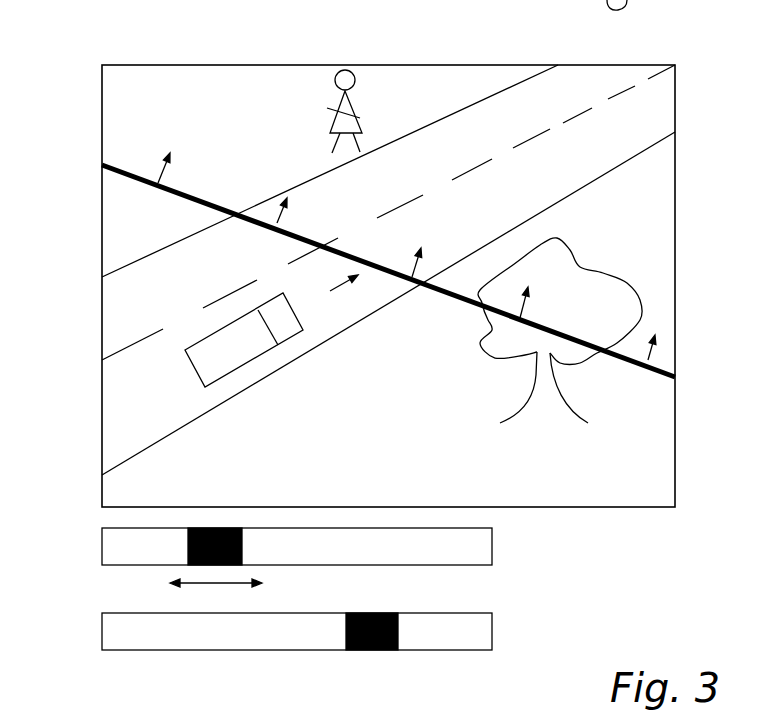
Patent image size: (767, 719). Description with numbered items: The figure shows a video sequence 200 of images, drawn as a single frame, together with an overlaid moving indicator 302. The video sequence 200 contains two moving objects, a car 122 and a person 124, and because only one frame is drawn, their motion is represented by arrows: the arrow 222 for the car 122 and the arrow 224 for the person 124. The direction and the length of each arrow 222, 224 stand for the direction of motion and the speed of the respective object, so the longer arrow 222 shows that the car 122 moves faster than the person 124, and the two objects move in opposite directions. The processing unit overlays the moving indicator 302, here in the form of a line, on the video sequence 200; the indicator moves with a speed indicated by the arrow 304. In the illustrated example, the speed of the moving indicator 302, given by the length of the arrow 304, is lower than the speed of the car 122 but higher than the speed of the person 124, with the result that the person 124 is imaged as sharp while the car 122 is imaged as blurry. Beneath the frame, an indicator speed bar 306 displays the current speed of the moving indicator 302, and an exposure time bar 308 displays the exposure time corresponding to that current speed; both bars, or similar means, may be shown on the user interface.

The video sequence 200 is at (200, 65).
The moving indicator 302 is at (207, 203).
The arrow 304 is at (158, 183).
The person 124 is at (367, 127).
The arrow 224 is at (315, 129).
The car 122 is at (260, 355).
The arrow 222 is at (330, 291).
The indicator speed bar 306 is at (102, 556).
The exposure time bar 308 is at (102, 640).